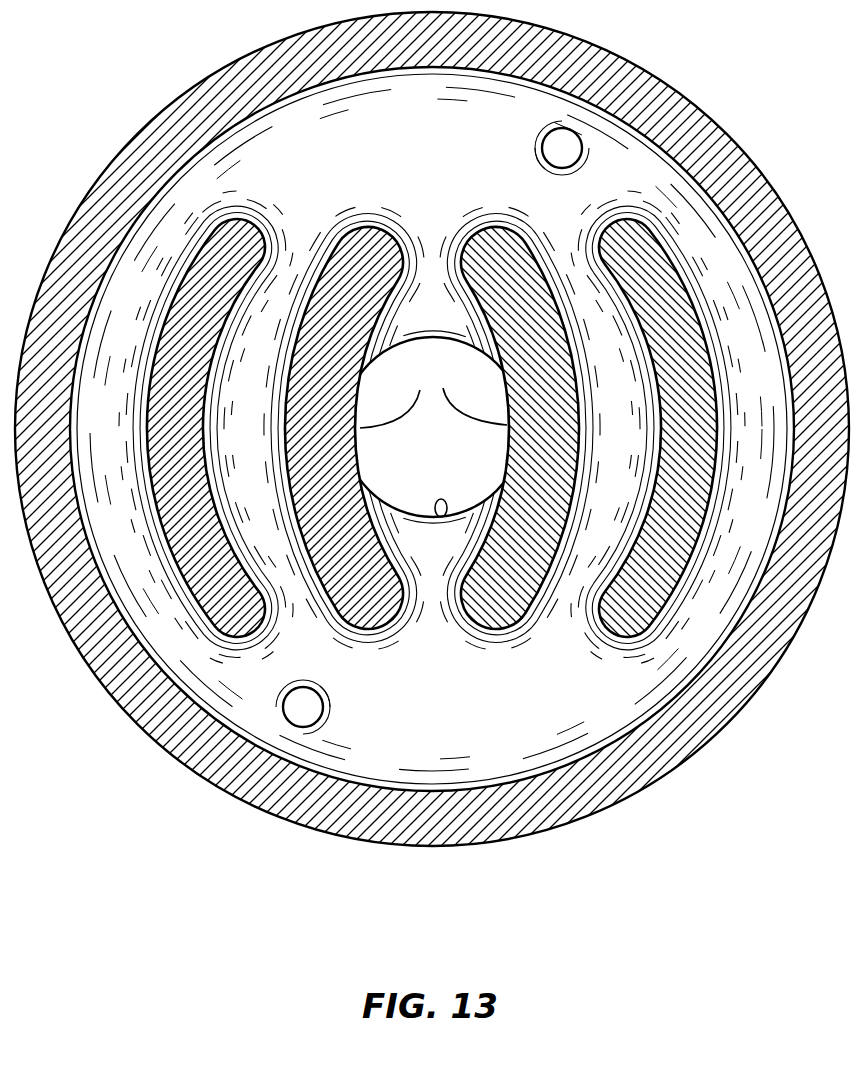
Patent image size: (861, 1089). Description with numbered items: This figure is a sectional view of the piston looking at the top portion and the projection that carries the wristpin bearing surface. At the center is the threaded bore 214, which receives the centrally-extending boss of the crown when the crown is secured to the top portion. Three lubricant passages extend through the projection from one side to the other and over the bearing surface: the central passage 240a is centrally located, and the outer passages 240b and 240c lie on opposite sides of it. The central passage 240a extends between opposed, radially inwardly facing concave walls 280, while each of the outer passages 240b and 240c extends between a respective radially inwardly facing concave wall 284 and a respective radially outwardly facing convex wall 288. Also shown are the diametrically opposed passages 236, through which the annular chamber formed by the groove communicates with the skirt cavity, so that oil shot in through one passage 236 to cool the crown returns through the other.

The threaded bore 214 is at (441, 517).
The passages 236 is at (584, 146).
The central lubricant passage 240a is at (441, 194).
The outer lubricant passage 240b is at (302, 210).
The outer lubricant passage 240c is at (567, 228).
The radially inwardly facing concave walls 280 is at (433, 427).
The radially inwardly facing concave wall 284 is at (227, 558).
The radially outwardly facing convex wall 288 is at (320, 580).